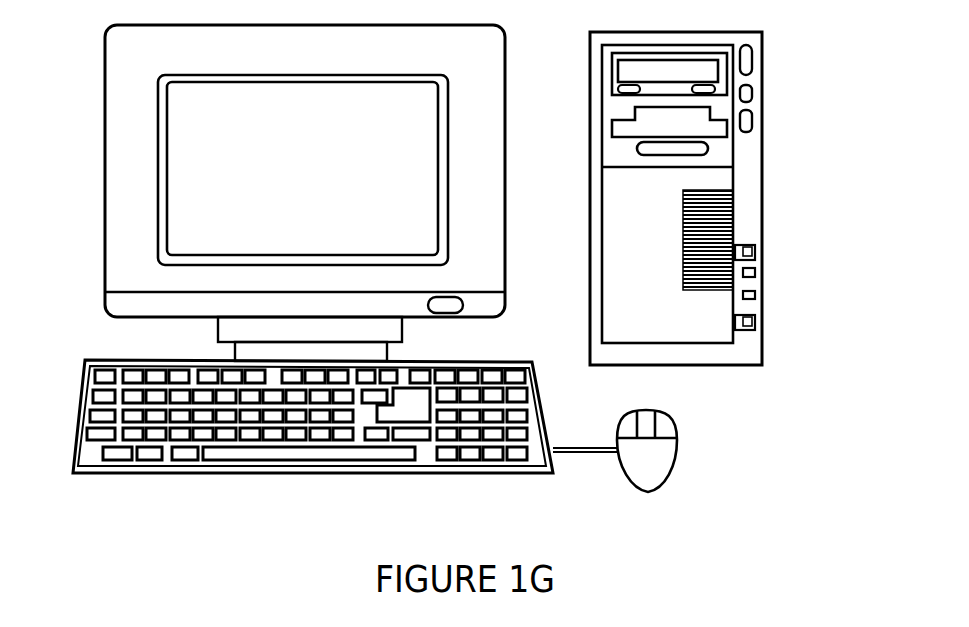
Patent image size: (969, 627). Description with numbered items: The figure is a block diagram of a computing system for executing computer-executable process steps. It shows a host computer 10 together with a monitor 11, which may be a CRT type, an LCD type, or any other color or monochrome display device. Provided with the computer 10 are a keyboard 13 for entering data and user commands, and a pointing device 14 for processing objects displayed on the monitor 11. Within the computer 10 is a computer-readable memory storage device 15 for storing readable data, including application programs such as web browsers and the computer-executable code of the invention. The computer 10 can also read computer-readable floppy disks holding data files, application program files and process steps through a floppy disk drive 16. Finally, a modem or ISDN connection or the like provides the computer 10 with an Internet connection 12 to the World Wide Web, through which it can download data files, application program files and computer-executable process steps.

The host computer 10 is at (88, 317).
The monitor 11 is at (488, 67).
The Internet connection 12 is at (755, 295).
The keyboard 13 is at (222, 473).
The pointing device 14 is at (675, 457).
The computer-readable memory storage device 15 is at (629, 88).
The floppy disk drive 16 is at (645, 150).